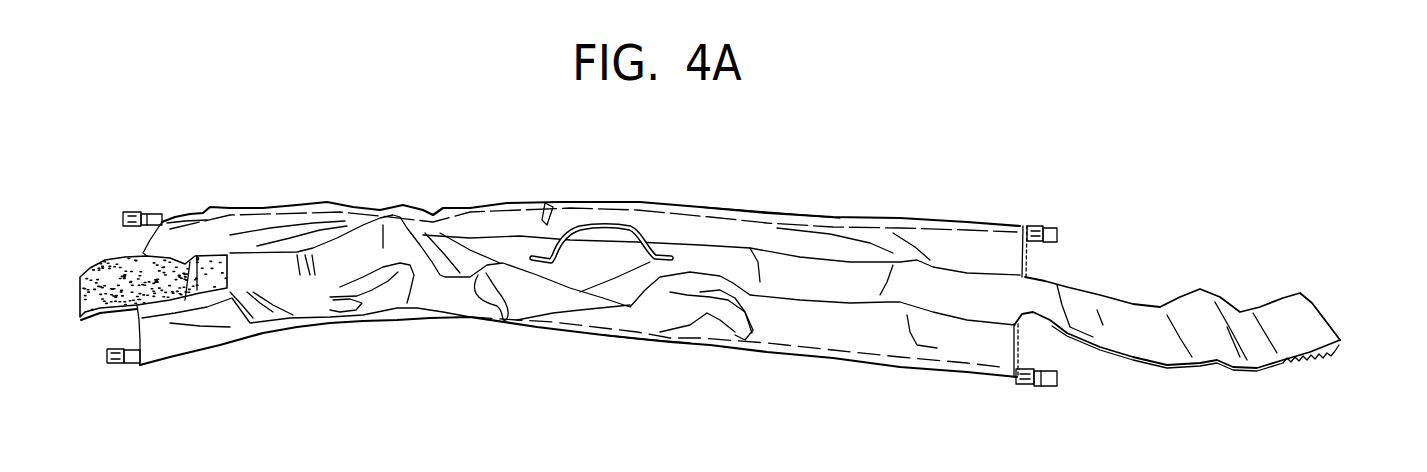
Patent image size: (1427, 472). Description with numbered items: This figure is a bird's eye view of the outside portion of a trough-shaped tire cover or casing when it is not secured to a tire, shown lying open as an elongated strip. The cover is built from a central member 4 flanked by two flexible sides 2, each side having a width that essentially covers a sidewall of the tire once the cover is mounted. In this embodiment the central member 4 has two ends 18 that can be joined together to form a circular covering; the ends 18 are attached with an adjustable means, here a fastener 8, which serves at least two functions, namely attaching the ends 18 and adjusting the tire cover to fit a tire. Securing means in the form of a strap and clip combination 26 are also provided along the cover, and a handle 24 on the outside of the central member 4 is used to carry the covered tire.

The flexible sides 2 is at (603, 299).
The central member 4 is at (578, 302).
The fastener 8 is at (153, 262).
The ends 18 is at (1340, 405).
The handle 24 is at (601, 192).
The strap and clip combination 26 is at (721, 271).